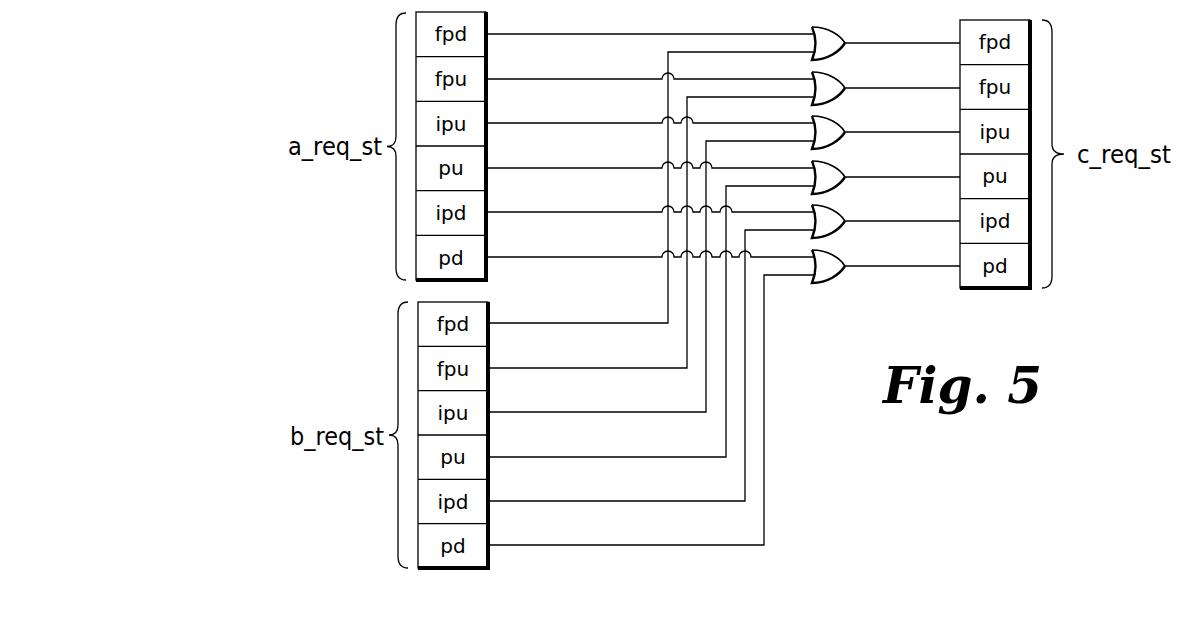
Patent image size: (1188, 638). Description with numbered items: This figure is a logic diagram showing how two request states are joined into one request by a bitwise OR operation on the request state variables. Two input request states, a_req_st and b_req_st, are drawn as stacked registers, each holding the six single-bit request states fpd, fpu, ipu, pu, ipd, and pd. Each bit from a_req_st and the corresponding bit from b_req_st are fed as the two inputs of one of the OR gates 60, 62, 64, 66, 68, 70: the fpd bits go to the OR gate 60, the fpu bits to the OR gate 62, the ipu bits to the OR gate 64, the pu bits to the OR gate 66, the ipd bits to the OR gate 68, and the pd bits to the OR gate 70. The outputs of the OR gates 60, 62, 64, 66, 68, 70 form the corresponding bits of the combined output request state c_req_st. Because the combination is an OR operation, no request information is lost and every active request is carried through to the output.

The OR gate 60 is at (847, 32).
The OR gate 62 is at (847, 77).
The OR gate 64 is at (847, 121).
The OR gate 66 is at (847, 166).
The OR gate 68 is at (847, 210).
The OR gate 70 is at (847, 255).